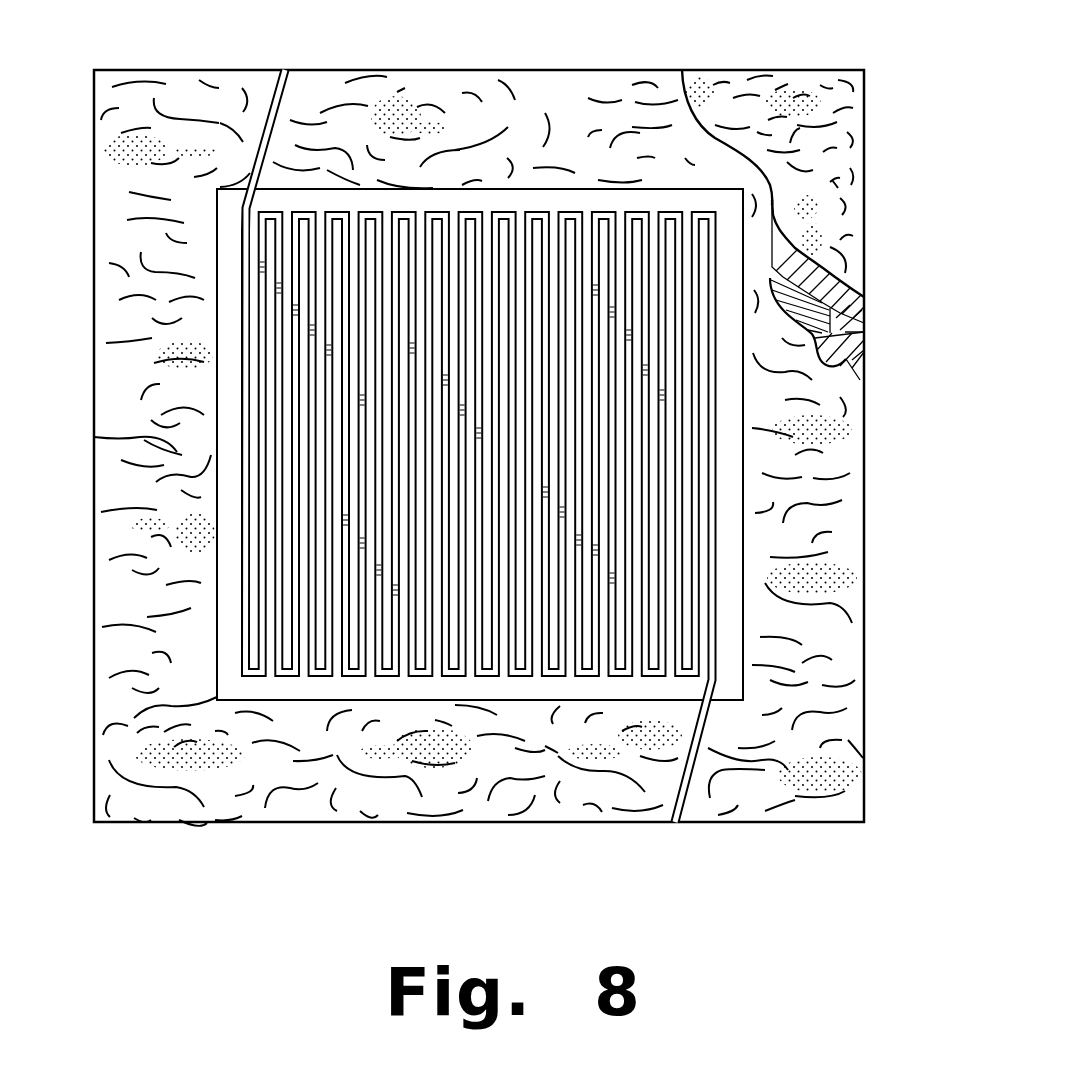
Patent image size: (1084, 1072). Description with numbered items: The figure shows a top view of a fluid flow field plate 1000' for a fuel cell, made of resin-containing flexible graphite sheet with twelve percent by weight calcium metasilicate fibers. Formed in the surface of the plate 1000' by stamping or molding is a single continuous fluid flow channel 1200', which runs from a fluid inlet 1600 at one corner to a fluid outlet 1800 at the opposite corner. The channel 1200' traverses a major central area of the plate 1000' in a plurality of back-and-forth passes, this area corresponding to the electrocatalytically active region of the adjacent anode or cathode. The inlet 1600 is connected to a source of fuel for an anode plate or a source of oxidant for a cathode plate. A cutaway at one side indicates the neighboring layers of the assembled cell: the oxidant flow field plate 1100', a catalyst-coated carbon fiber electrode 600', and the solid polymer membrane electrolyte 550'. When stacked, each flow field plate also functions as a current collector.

The fluid flow field plate 1000' is at (487, 487).
The oxidant flow field plate 1100' is at (786, 119).
The continuous fluid flow channel 1200' is at (479, 353).
The fluid inlet 1600 is at (289, 72).
The fluid outlet 1800 is at (672, 822).
The carbon fiber electrode 600' is at (860, 351).
The solid polymer membrane electrolyte 550' is at (857, 336).